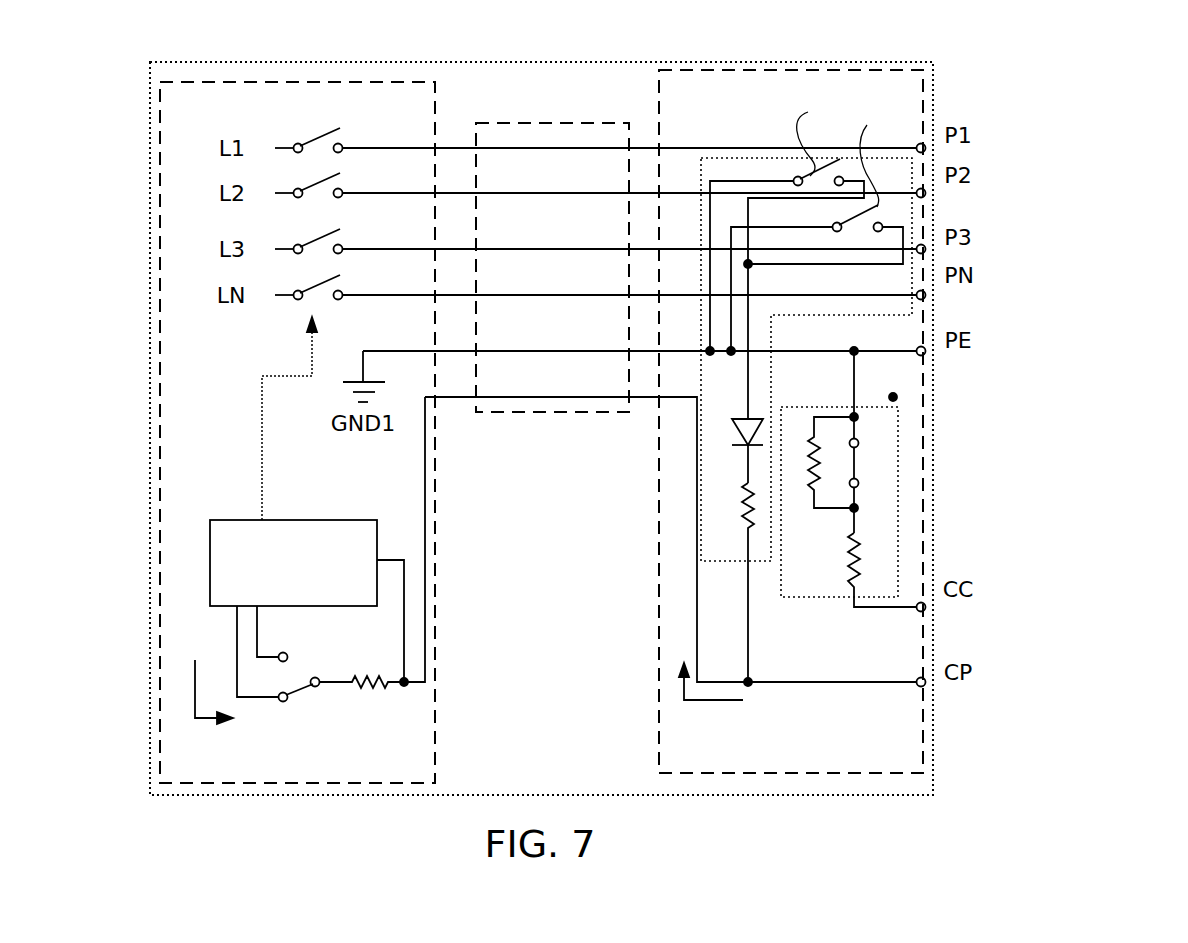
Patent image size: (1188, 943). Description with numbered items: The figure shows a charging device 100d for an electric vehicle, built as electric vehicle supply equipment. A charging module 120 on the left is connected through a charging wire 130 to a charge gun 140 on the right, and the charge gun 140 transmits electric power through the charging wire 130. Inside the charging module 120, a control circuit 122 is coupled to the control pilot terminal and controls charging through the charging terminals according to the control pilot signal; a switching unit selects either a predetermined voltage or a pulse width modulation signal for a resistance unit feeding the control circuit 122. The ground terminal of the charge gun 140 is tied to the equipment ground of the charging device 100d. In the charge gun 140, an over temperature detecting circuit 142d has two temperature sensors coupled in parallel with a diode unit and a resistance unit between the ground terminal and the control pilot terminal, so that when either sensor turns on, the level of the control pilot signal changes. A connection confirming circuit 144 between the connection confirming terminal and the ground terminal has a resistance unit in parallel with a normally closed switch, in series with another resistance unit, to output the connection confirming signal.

The charging device 100d is at (1159, 54).
The charging module 120 is at (435, 759).
The control circuit 122 is at (275, 577).
The charging wire 130 is at (540, 413).
The charge gun 140 is at (659, 688).
The over temperature detecting circuit 142d is at (750, 158).
The connection confirming circuit 144 is at (811, 597).